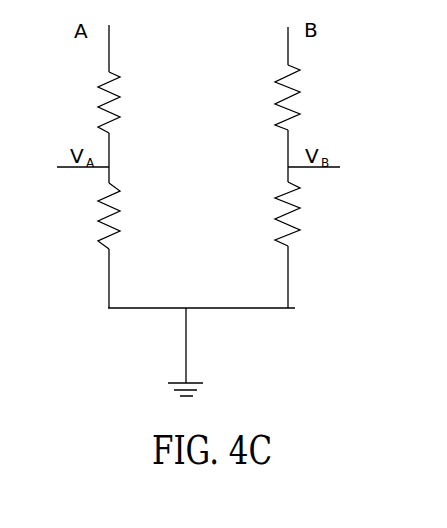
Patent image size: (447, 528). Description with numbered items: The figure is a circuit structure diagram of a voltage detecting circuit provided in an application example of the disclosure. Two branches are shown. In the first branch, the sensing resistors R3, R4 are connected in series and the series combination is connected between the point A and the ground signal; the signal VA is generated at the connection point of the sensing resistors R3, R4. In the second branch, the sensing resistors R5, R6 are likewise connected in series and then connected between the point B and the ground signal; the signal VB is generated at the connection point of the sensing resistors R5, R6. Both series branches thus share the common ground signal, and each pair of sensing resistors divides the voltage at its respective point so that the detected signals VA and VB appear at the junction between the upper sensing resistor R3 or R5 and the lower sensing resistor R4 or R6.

The sensing resistor R3 is at (85, 102).
The sensing resistor R4 is at (85, 216).
The sensing resistor R5 is at (307, 97).
The sensing resistor R6 is at (307, 214).